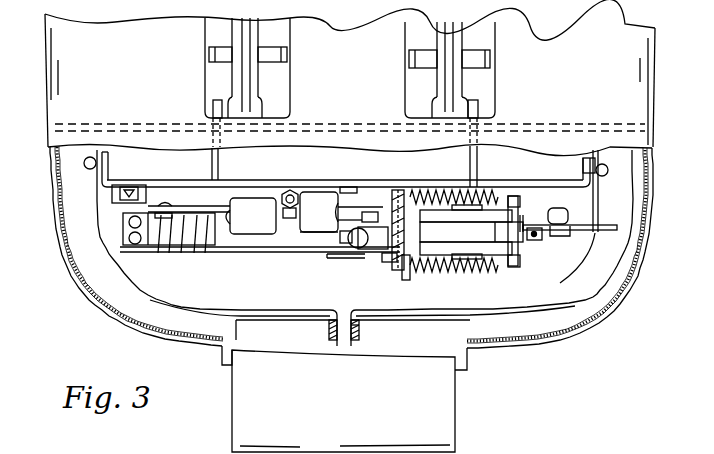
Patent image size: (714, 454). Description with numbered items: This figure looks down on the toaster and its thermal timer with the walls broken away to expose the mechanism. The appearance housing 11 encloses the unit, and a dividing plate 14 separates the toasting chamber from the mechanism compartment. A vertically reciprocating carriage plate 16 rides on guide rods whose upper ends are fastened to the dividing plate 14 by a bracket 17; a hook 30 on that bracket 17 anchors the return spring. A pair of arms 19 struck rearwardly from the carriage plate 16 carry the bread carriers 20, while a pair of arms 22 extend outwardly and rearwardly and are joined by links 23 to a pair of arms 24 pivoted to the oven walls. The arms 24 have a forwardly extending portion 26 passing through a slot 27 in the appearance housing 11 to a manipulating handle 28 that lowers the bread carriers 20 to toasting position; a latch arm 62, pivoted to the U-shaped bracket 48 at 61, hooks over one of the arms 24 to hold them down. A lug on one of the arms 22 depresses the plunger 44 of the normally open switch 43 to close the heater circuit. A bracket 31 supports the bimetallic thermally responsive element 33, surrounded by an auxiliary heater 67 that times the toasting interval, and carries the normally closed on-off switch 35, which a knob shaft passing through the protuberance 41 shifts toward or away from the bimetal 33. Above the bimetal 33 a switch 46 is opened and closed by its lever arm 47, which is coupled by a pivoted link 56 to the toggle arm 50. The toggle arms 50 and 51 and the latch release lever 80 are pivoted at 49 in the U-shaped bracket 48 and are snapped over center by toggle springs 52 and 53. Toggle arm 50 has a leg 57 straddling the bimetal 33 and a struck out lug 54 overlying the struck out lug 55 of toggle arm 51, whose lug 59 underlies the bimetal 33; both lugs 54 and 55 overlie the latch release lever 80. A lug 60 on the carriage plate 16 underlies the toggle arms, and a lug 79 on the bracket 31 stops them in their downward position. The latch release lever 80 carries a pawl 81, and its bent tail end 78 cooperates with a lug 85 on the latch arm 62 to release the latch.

The appearance housing 11 is at (47, 120).
The dividing plate 14 is at (85, 124).
The carriage plate 16 is at (268, 181).
The bracket 17 is at (308, 186).
The arms 19 is at (212, 161).
The bread carriers 20 is at (258, 83).
The arms 22 is at (140, 179).
The links 23 is at (93, 169).
The arms 24 is at (599, 208).
The forwardly extending portion 26 is at (328, 324).
The slot 27 is at (358, 330).
The manipulating handle 28 is at (343, 401).
The hook 30 is at (341, 187).
The bracket 31 is at (179, 208).
The bimetallic thermally responsive element 33 is at (260, 240).
The on-off switch 35 is at (251, 216).
The protuberance 41 is at (468, 366).
The on-off switch 43 is at (112, 194).
The plunger 44 is at (140, 193).
The switch 46 is at (319, 212).
The lever arm 47 is at (350, 207).
The U-shaped bracket 48 is at (518, 246).
The pivot 49 is at (456, 274).
The toggle arm 50 is at (466, 226).
The toggle arm 51 is at (433, 248).
The toggle spring 52 is at (442, 191).
The toggle spring 53 is at (486, 274).
The struck out lug 54 is at (400, 226).
The struck out lug 55 is at (405, 272).
The pivoted link 56 is at (368, 219).
The leg 57 is at (319, 224).
The lug 59 is at (327, 256).
The lug 60 is at (390, 260).
The pivot 61 is at (553, 233).
The latch arm 62 is at (580, 224).
The auxiliary heater 67 is at (203, 252).
The tail end 78 is at (508, 234).
The lug 79 is at (352, 260).
The latch release lever 80 is at (466, 241).
The pawl 81 is at (340, 236).
The lug 85 is at (548, 247).